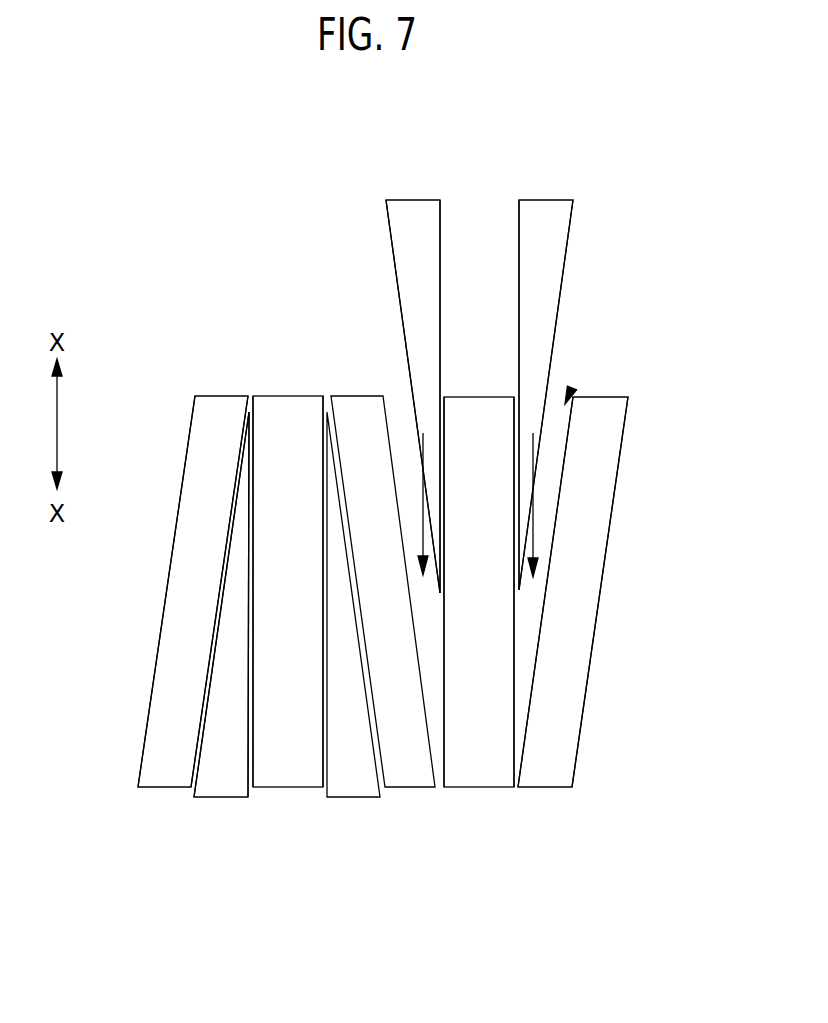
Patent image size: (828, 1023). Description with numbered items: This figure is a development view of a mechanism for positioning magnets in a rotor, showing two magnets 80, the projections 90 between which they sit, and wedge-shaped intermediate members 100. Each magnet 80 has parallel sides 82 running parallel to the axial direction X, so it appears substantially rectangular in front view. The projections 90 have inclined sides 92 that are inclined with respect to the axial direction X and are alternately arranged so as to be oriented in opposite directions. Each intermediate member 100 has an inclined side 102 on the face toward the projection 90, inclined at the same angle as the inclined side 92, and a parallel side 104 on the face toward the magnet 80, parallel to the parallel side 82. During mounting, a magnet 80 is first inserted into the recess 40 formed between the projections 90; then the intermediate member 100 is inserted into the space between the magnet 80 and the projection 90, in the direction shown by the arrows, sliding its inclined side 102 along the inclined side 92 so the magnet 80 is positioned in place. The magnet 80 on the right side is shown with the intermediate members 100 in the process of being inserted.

The recess 40 is at (572, 388).
The magnet 80 is at (282, 397).
The parallel side 82 is at (253, 540).
The projection 90 is at (228, 396).
The inclined side 92 is at (219, 593).
The intermediate member 100 is at (415, 199).
The inclined side 102 is at (393, 255).
The parallel side 104 is at (440, 262).